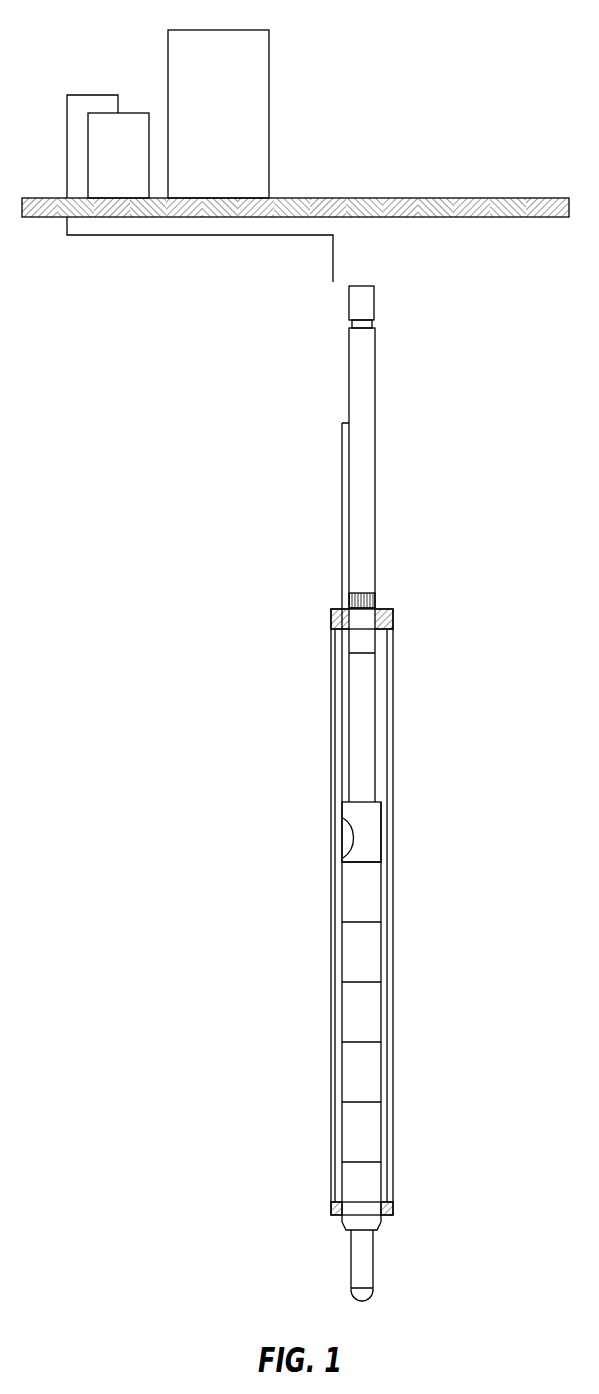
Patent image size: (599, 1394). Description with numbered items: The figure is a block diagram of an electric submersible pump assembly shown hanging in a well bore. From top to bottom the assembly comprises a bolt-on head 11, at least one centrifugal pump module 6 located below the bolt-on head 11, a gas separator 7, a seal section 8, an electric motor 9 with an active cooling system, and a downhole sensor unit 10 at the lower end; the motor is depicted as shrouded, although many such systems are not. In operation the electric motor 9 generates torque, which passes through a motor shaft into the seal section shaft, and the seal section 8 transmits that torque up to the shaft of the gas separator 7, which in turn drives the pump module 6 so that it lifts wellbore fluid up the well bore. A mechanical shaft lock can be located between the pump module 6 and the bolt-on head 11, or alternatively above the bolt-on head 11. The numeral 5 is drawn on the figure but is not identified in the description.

The port opening 5 is at (340, 840).
The centrifugal pump module 6 is at (375, 462).
The gas separator 7 is at (383, 612).
The seal section 8 is at (361, 726).
The electric motor 9 is at (363, 860).
The downhole sensor unit 10 is at (373, 1293).
The bolt-on head 11 is at (374, 302).